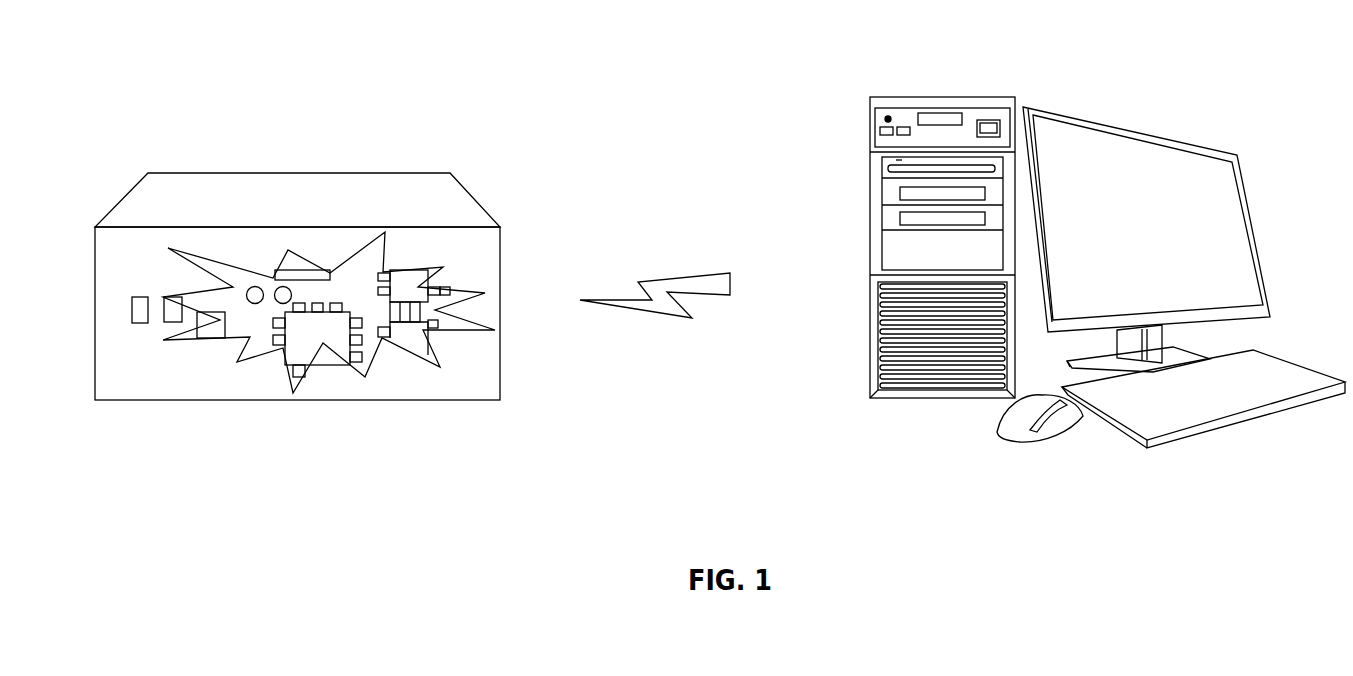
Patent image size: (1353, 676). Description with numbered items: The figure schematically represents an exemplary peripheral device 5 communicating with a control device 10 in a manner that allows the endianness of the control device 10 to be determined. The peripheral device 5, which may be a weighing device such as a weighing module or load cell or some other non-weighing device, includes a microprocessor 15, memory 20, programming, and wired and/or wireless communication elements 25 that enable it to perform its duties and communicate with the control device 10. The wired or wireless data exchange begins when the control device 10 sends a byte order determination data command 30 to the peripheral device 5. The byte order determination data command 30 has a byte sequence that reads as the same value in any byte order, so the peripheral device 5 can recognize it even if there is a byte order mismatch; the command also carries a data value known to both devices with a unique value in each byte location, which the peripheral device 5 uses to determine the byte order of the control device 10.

The peripheral device 5 is at (272, 110).
The control device 10 is at (1160, 63).
The microprocessor 15 is at (296, 352).
The memory 20 is at (276, 277).
The wired and/or wireless communication elements 25 is at (422, 272).
The byte order determination data command 30 is at (723, 283).